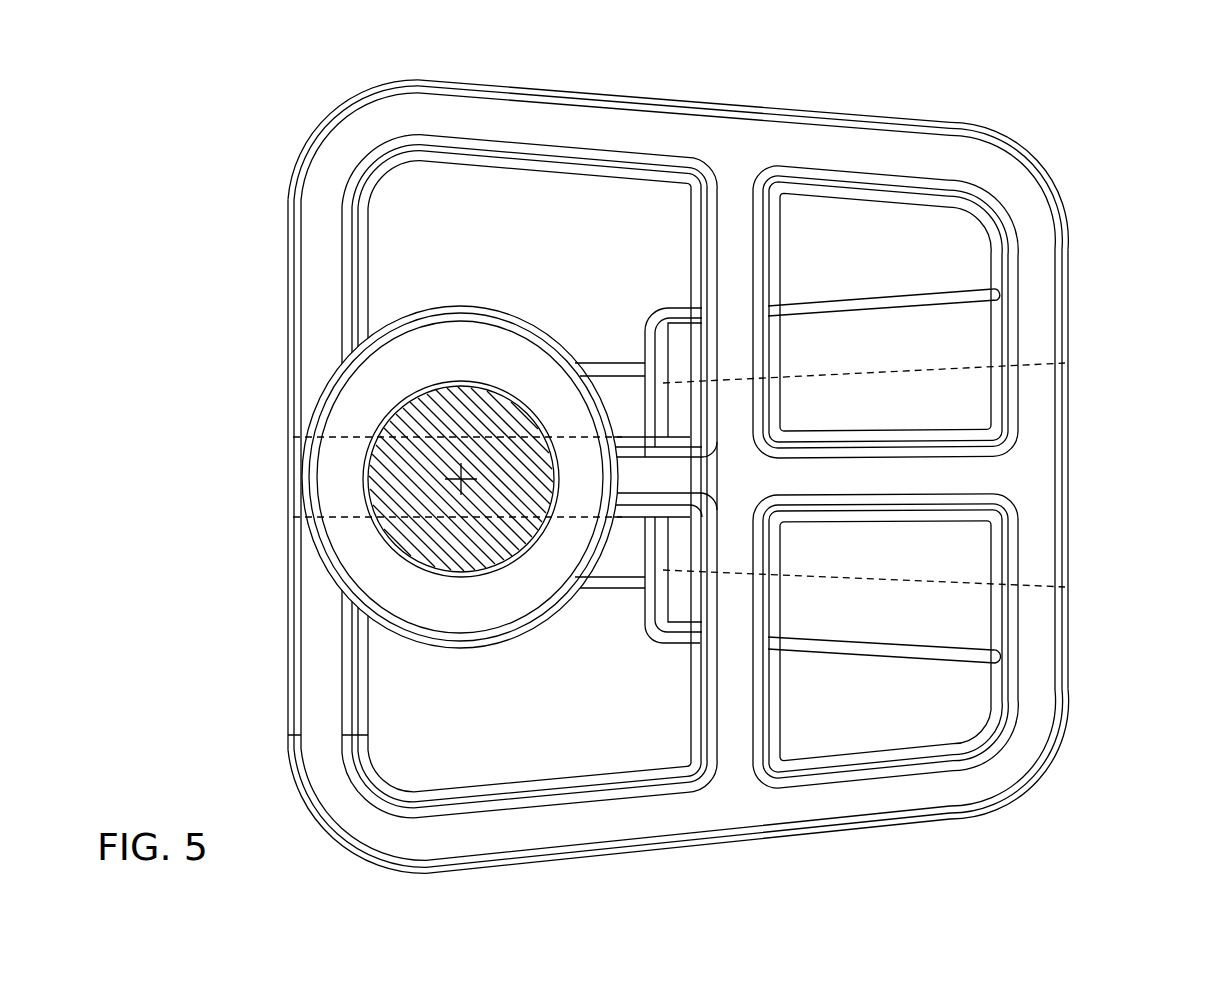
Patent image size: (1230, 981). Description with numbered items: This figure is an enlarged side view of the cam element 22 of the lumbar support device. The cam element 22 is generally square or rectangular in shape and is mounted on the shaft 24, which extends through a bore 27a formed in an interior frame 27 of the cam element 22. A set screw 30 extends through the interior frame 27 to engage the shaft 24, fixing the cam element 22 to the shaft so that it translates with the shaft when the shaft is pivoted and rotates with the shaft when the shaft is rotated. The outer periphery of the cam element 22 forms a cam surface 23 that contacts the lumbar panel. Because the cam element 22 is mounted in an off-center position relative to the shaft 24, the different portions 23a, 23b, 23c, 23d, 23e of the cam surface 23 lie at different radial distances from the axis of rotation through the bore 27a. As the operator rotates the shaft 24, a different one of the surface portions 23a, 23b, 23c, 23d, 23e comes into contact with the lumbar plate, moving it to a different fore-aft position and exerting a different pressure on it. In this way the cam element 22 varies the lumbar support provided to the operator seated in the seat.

The cam element 22 is at (983, 777).
The cam surface 23 is at (560, 862).
The cam surface portion 23a is at (288, 582).
The cam surface portion 23b is at (310, 147).
The cam surface portion 23c is at (867, 116).
The cam surface portion 23d is at (1032, 165).
The cam surface portion 23e is at (1070, 308).
The shaft 24 is at (483, 427).
The interior frame 27 is at (510, 588).
The bore 27a is at (447, 382).
The set screw 30 is at (288, 468).